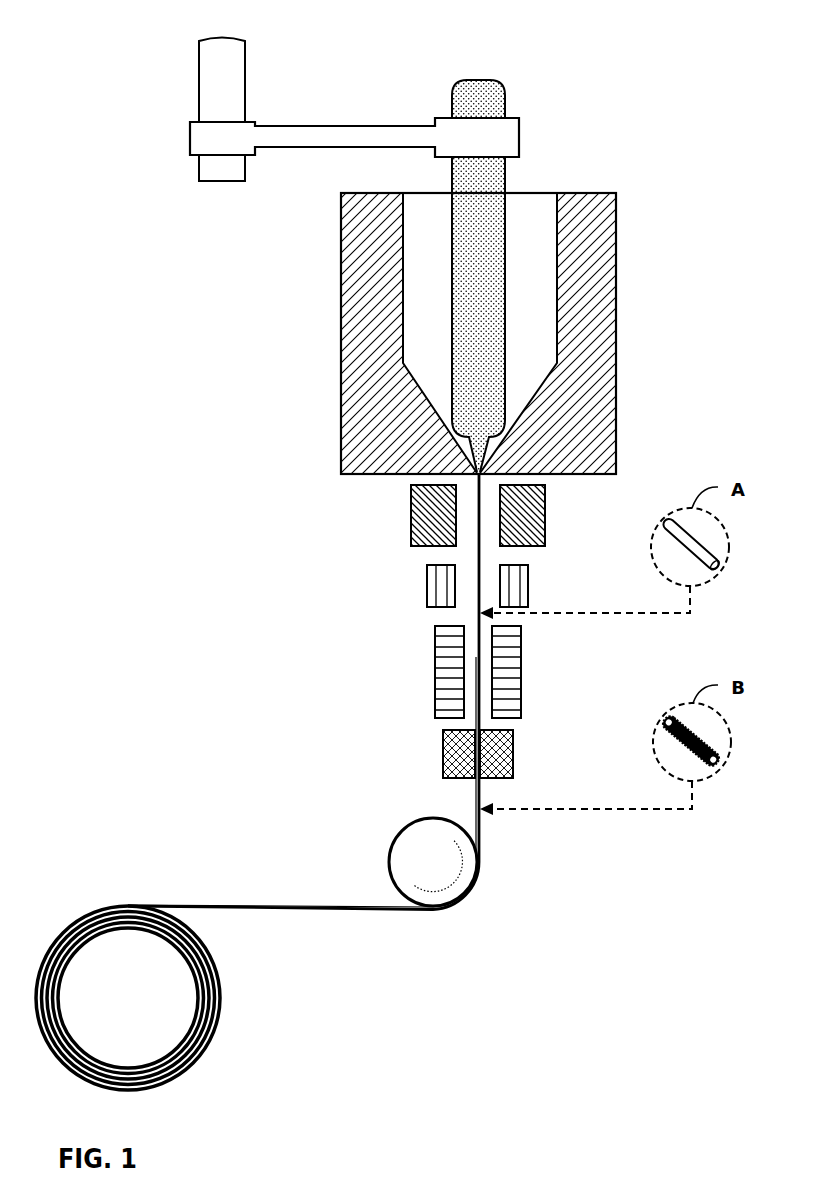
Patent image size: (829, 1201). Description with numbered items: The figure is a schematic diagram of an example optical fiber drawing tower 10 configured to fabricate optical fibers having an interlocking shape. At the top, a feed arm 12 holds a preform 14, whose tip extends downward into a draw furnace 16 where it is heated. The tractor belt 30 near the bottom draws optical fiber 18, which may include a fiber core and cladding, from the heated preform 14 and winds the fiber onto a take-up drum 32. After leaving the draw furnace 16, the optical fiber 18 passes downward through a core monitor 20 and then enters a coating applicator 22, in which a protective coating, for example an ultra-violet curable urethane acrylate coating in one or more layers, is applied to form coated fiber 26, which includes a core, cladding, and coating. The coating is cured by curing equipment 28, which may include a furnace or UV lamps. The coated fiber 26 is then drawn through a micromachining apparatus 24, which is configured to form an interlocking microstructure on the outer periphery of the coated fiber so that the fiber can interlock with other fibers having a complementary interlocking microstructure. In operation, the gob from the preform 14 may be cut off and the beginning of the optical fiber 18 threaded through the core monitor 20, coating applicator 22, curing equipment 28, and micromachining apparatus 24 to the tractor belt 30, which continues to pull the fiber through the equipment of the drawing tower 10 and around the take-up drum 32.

The optical fiber drawing tower 10 is at (593, 48).
The feed arm 12 is at (190, 128).
The preform 14 is at (499, 82).
The draw furnace 16 is at (593, 193).
The optical fiber 18 is at (481, 481).
The core monitor 20 is at (411, 517).
The coating applicator 22 is at (530, 585).
The micromachining apparatus 24 is at (443, 734).
The coated optical fiber 26 is at (482, 661).
The curing equipment 28 is at (435, 665).
The tractor belt 30 is at (401, 835).
The take-up drum 32 is at (217, 969).